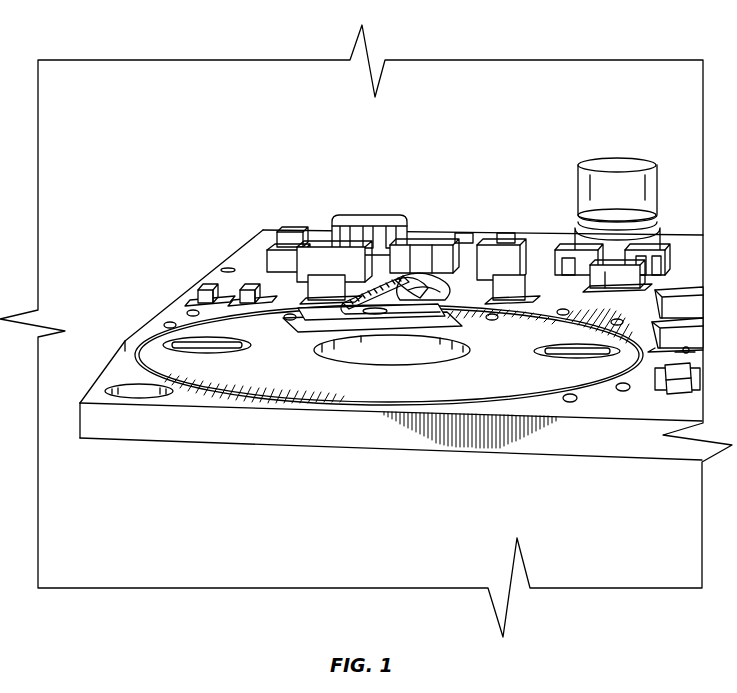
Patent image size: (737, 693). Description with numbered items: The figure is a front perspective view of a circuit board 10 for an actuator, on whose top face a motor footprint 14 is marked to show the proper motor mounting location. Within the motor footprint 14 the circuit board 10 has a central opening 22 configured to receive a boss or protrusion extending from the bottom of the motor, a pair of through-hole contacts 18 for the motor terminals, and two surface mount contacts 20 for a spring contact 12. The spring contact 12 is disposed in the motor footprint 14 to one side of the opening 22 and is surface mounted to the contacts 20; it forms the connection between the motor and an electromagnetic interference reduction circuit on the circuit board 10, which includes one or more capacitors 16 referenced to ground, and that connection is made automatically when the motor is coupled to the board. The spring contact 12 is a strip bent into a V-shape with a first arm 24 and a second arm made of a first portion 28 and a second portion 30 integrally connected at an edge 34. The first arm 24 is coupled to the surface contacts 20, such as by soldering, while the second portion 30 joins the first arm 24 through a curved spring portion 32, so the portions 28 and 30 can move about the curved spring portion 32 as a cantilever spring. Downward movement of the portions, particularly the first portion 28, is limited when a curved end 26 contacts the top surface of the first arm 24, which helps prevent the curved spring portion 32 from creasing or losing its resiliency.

The circuit board 10 is at (203, 423).
The spring contact 12 is at (386, 280).
The motor footprint 14 is at (364, 405).
The capacitors 16 is at (247, 290).
The through-hole contacts 18 is at (202, 352).
The surface mount contacts 20 is at (457, 320).
The opening 22 is at (438, 363).
The first arm 24 is at (382, 315).
The curved end 26 is at (450, 308).
The first portion 28 is at (397, 285).
The second portion 30 is at (393, 278).
The curved spring portion 32 is at (343, 302).
The edge 34 is at (403, 278).